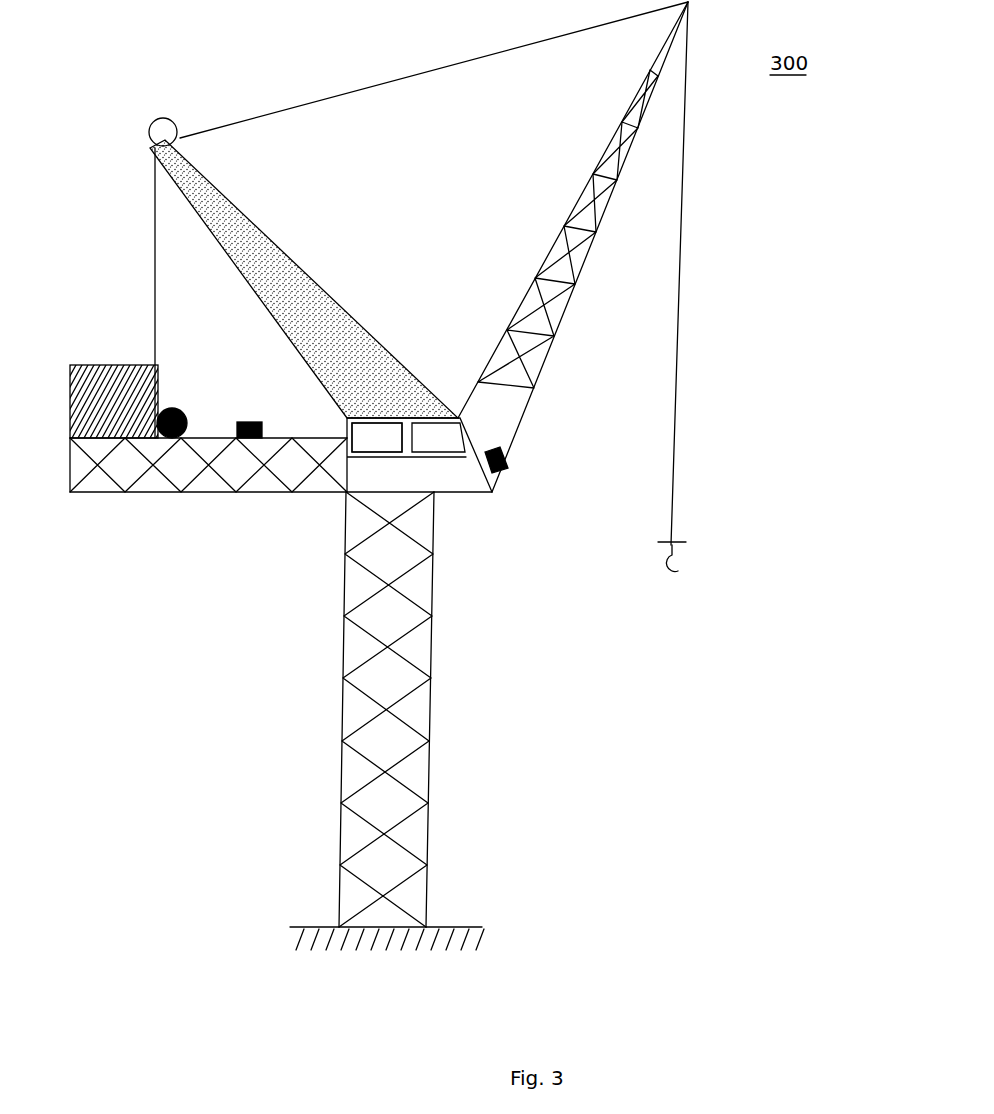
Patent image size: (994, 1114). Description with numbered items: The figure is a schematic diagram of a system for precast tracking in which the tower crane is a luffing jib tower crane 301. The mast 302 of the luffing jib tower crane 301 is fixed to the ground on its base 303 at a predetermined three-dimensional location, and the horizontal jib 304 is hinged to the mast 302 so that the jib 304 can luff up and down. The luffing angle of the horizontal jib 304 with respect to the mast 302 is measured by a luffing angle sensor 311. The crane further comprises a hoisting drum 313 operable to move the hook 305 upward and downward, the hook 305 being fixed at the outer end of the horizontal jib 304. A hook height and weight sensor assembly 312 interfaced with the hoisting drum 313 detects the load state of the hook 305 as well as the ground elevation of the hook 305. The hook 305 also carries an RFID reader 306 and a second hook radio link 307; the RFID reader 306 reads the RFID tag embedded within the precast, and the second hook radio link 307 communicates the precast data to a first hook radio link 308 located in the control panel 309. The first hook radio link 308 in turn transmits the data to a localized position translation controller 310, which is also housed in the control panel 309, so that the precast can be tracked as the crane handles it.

The luffing jib tower crane 301 is at (400, 69).
The mast 302 is at (428, 803).
The base 303 is at (480, 928).
The horizontal jib 304 is at (510, 318).
The hook 305 is at (668, 578).
The RFID reader 306 is at (678, 562).
The second hook radio link 307 is at (654, 547).
The first hook radio link 308 is at (430, 437).
The control panel 309 is at (350, 493).
The localized position translation controller 310 is at (363, 440).
The luffing angle sensor 311 is at (503, 466).
The hook height and weight sensor assembly 312 is at (249, 441).
The hoisting drum 313 is at (178, 408).